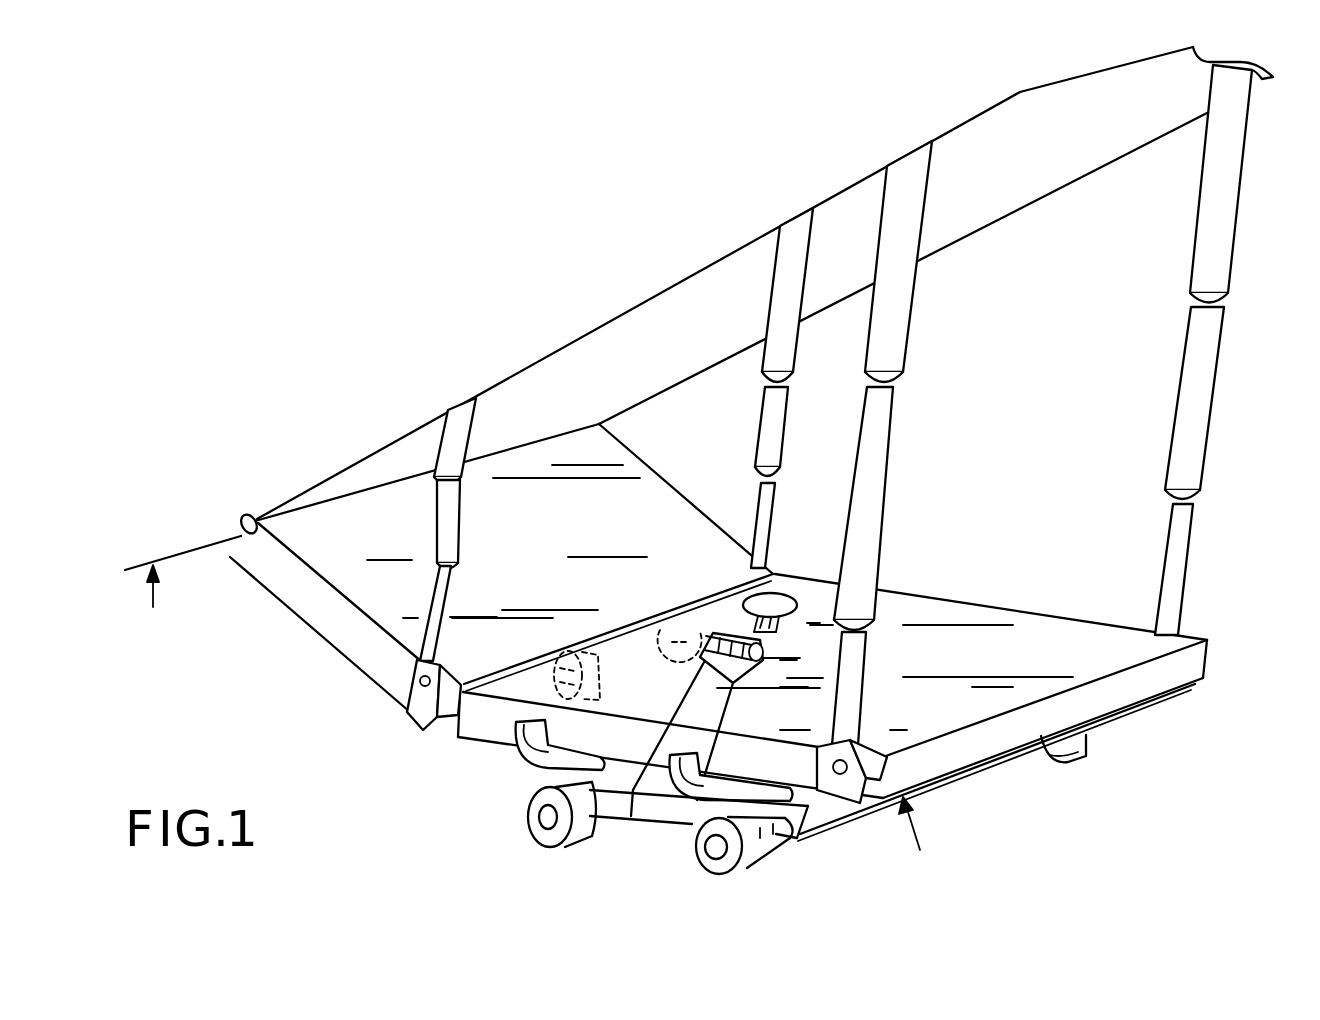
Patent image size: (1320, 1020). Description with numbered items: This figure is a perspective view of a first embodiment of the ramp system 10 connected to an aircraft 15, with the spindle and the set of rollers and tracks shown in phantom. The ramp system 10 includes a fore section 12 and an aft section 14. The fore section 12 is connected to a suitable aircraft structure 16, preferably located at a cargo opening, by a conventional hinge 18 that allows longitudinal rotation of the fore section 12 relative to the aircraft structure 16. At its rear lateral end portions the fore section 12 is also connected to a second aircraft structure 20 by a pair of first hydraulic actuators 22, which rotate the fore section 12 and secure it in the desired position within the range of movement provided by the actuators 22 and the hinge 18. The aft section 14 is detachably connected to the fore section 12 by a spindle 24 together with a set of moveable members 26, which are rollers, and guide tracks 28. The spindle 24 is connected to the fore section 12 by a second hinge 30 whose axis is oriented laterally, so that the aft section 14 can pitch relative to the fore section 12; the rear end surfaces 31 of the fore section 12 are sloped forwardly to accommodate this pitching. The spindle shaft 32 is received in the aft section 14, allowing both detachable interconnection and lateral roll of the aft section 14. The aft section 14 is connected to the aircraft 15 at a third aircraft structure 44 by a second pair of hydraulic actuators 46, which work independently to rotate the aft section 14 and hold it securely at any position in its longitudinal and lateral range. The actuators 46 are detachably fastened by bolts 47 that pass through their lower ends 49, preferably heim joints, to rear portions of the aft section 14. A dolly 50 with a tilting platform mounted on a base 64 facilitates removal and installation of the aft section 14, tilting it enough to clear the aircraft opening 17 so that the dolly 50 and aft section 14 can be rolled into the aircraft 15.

The ramp system 10 is at (265, 707).
The fore section 12 is at (624, 443).
The aft section 14 is at (1028, 613).
The aircraft 15 is at (162, 607).
The aircraft structure 16 is at (220, 550).
The aircraft opening 17 is at (1009, 175).
The hinge 18 is at (258, 513).
The second aircraft structure 20 is at (841, 238).
The first hydraulic actuators 22 is at (787, 432).
The spindle 24 is at (633, 790).
The moveable members 26 is at (556, 682).
The guide tracks 28 is at (780, 594).
The second hinge 30 is at (663, 606).
The rear end surfaces 31 is at (447, 718).
The spindle shaft 32 is at (697, 800).
The third aircraft structure 44 is at (1177, 103).
The second pair of hydraulic actuators 46 is at (1182, 345).
The bolts 47 is at (893, 787).
The lower ends 49 is at (840, 792).
The dolly 50 is at (919, 840).
The base 64 is at (818, 820).